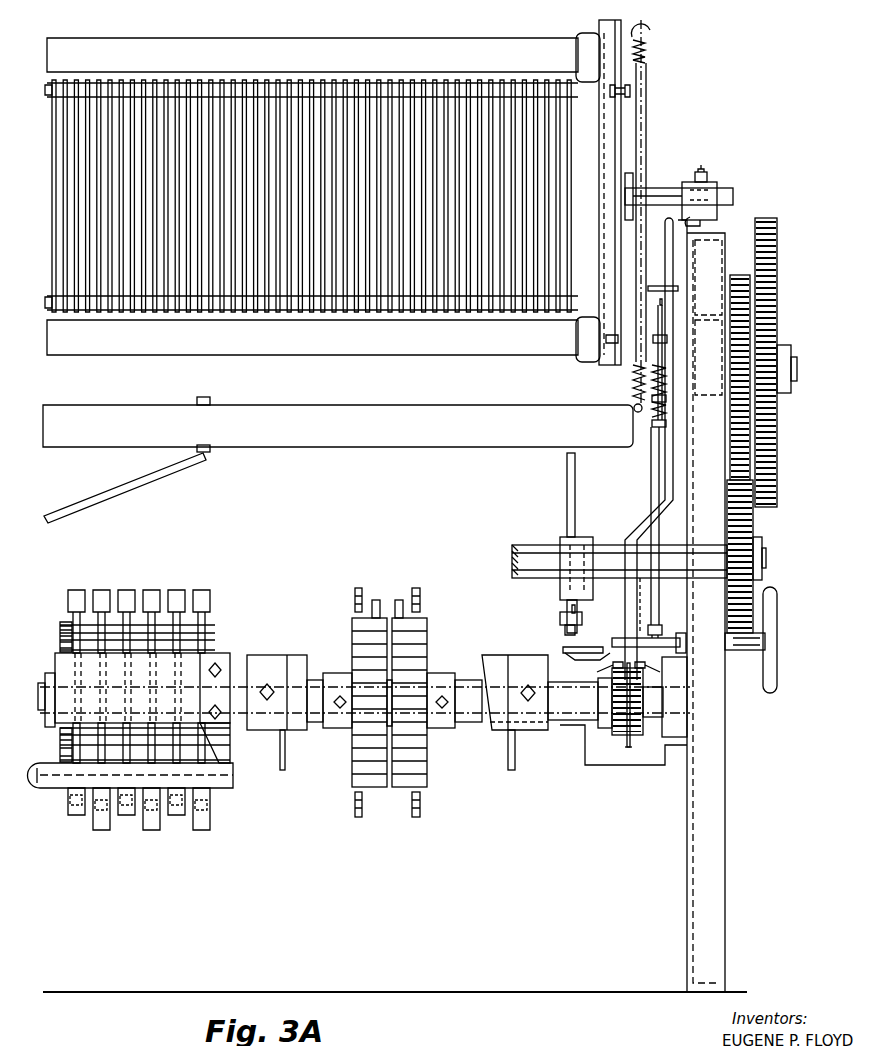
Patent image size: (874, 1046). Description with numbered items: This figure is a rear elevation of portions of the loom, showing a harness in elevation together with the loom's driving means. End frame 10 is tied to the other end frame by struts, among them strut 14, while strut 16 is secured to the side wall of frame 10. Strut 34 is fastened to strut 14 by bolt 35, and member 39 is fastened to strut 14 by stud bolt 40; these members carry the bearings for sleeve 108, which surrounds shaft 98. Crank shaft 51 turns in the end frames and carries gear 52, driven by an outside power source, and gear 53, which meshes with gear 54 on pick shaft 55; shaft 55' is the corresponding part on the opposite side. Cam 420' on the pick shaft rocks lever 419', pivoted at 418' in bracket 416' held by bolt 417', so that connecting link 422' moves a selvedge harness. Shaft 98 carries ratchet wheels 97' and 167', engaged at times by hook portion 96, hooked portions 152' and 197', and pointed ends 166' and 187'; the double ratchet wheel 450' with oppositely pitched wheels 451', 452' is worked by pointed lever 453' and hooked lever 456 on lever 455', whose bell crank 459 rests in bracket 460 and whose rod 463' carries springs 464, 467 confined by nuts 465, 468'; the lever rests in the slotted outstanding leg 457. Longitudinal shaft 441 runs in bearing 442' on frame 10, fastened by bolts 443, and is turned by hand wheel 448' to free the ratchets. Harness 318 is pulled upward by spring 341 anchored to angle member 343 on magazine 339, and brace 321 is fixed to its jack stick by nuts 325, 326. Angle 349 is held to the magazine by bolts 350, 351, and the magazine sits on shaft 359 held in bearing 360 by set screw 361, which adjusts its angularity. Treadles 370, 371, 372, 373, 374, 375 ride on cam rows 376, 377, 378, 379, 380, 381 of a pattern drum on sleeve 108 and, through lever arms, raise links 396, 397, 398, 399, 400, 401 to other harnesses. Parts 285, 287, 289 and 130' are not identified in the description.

The harness 318 is at (145, 42).
The angle 349 is at (586, 36).
The bolt 351 is at (607, 338).
The nut 325 is at (206, 397).
The nut 326 is at (212, 452).
The brace 321 is at (130, 488).
The magazine 339 is at (626, 115).
The bolt 350 is at (631, 90).
The spring 341 is at (648, 50).
The angle member 343 is at (640, 24).
The shaft 359 is at (648, 186).
The bearing 360 is at (710, 182).
The set screw 361 is at (704, 172).
The end frame 10 is at (725, 764).
The gear 52 is at (777, 462).
The gear 53 is at (732, 270).
The crank shaft 51 is at (797, 358).
The gear 54 is at (755, 523).
The pick shaft 55 is at (780, 558).
The hand wheel 448' is at (772, 636).
The pick shaft 55' is at (600, 556).
The connecting link 422' is at (546, 493).
The cam 420' is at (551, 571).
The pivot 418' is at (542, 600).
The lever 419' is at (545, 614).
The bracket 416' is at (541, 630).
The bolt 417' is at (555, 646).
The pointed lever 453' is at (582, 664).
The lever 455' is at (612, 605).
The nut 468' is at (642, 449).
The rod 463' is at (635, 531).
The bearing 442' is at (668, 618).
The nut 465 is at (656, 342).
The bell crank 459 is at (670, 310).
The outstanding leg 457 is at (678, 288).
The bracket 460 is at (668, 340).
The spring 464 is at (668, 402).
The spring 467 is at (668, 424).
The longitudinal shaft 441 is at (618, 630).
The bolt 443 is at (660, 662).
The hooked lever 456 is at (660, 672).
The ratchet wheel 450' is at (612, 721).
The ratchet wheel 451' is at (587, 716).
The ratchet wheel 452' is at (624, 721).
The strut 14 is at (676, 712).
The strut 16 is at (668, 768).
The shaft 98 is at (320, 678).
The bolt 35 is at (272, 678).
The strut 34 is at (285, 748).
The ratchet wheel 167' is at (349, 701).
The ratchet wheel 97' is at (425, 694).
The pointed end 187' is at (342, 590).
The pointed end 166' is at (384, 590).
The hooked portion 152' is at (414, 590).
The hook portion 96 is at (420, 590).
The hooked portion 197' is at (330, 806).
The pin 130' is at (440, 804).
The sleeve 108 is at (468, 678).
The stud bolt 40 is at (532, 680).
The member 39 is at (516, 768).
The drum 289 is at (218, 662).
The plate 287 is at (222, 753).
The rail 285 is at (230, 784).
The link 396 is at (77, 590).
The link 397 is at (110, 584).
The link 398 is at (126, 590).
The link 399 is at (147, 590).
The link 400 is at (175, 590).
The link 401 is at (197, 590).
The row of cams 376 is at (70, 816).
The treadle 370 is at (74, 810).
The row of cams 377 is at (94, 830).
The treadle 371 is at (104, 820).
The treadle 372 is at (126, 828).
The row of cams 378 is at (124, 816).
The row of cams 379 is at (154, 831).
The treadle 373 is at (150, 812).
The treadle 374 is at (186, 822).
The row of cams 380 is at (178, 812).
The treadle 375 is at (210, 822).
The row of cams 381 is at (208, 804).